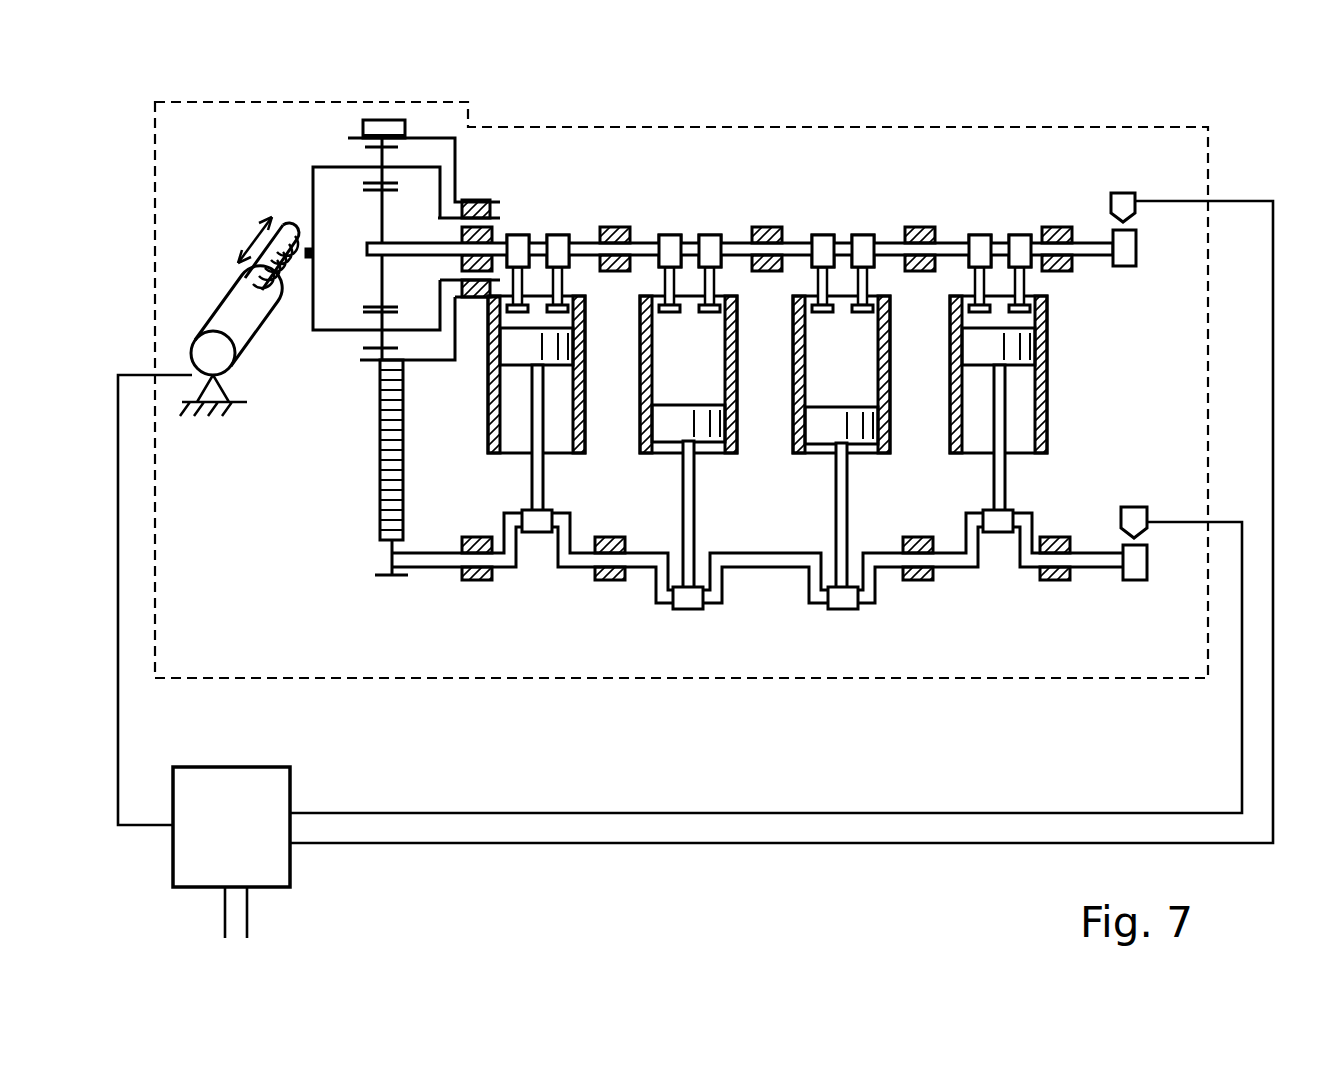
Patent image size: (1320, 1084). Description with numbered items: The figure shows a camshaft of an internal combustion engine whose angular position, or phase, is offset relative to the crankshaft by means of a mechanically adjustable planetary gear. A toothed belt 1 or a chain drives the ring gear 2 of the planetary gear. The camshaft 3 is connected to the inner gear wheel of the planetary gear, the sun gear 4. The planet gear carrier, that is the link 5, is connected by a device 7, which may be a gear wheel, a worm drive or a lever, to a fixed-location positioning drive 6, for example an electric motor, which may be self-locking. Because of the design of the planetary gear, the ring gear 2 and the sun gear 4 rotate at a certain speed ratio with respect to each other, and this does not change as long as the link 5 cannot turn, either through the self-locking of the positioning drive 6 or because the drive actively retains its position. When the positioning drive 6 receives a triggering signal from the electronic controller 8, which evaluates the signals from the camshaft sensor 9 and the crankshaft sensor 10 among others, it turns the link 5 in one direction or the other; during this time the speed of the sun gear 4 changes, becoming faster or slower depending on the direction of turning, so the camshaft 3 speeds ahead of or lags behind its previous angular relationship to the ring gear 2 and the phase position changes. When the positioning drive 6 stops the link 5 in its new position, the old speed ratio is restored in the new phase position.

The toothed belt 1 is at (380, 127).
The ring gear 2 is at (447, 137).
The camshaft 3 is at (585, 243).
The sun gear 4 is at (380, 222).
The link 5 is at (313, 187).
The positioning drive 6 is at (233, 318).
The device 7 is at (298, 237).
The electronic controller 8 is at (231, 852).
The camshaft sensor 9 is at (1118, 202).
The crankshaft sensor 10 is at (1137, 520).